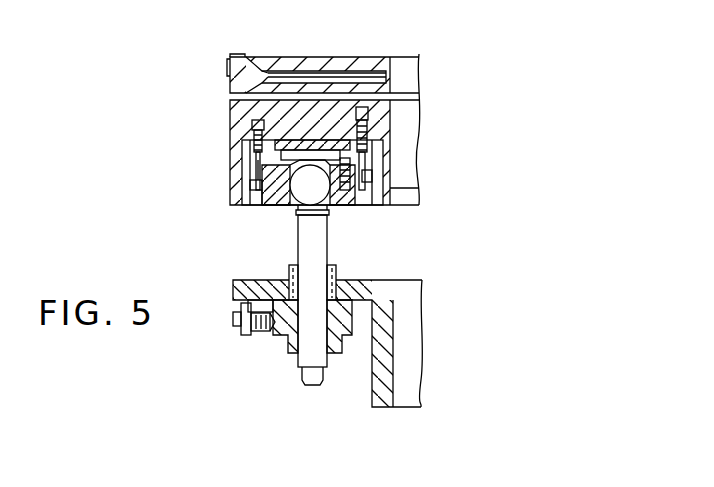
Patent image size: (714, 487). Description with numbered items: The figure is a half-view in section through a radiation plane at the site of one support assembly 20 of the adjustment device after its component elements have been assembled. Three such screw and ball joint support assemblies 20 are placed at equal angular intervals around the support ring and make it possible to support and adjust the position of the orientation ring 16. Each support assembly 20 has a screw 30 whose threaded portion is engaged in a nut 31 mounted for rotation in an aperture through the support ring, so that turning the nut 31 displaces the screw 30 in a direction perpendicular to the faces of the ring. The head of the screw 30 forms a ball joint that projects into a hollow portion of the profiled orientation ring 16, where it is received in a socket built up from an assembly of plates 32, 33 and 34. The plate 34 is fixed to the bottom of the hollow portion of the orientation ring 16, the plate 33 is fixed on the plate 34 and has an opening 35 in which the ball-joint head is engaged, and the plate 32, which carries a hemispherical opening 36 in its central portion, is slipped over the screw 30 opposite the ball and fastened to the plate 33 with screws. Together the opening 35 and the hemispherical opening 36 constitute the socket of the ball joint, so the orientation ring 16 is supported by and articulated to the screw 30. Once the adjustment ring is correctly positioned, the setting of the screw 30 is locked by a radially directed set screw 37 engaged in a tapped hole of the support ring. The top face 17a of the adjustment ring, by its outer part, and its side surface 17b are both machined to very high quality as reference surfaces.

The top face of the adjustment ring 17a is at (238, 55).
The side surface of the adjustment ring 17b is at (228, 68).
The orientation ring 16 is at (240, 112).
The plate 34 is at (244, 168).
The opening in plate 33 35 is at (355, 173).
The plate 33 is at (247, 204).
The plate 32 is at (273, 200).
The hemispherical opening 36 is at (322, 212).
The screw 30 is at (318, 252).
The nut 31 is at (346, 335).
The set screw 37 is at (258, 336).
The support assembly 20 is at (285, 357).